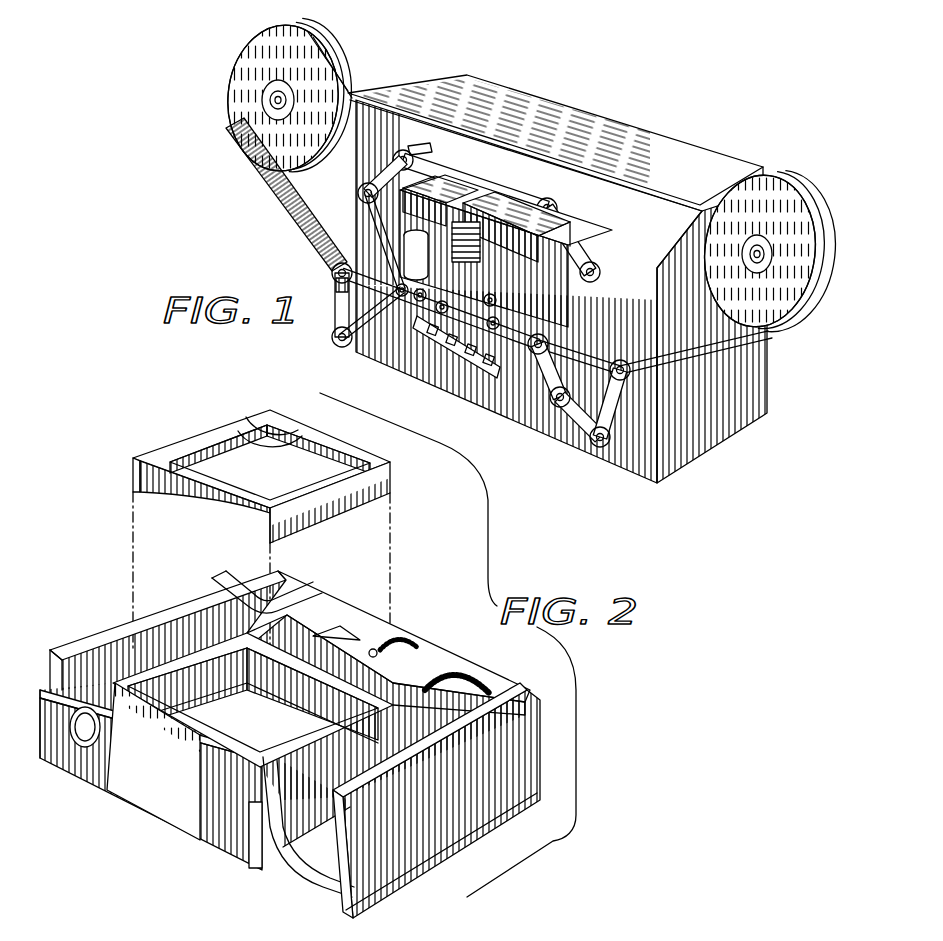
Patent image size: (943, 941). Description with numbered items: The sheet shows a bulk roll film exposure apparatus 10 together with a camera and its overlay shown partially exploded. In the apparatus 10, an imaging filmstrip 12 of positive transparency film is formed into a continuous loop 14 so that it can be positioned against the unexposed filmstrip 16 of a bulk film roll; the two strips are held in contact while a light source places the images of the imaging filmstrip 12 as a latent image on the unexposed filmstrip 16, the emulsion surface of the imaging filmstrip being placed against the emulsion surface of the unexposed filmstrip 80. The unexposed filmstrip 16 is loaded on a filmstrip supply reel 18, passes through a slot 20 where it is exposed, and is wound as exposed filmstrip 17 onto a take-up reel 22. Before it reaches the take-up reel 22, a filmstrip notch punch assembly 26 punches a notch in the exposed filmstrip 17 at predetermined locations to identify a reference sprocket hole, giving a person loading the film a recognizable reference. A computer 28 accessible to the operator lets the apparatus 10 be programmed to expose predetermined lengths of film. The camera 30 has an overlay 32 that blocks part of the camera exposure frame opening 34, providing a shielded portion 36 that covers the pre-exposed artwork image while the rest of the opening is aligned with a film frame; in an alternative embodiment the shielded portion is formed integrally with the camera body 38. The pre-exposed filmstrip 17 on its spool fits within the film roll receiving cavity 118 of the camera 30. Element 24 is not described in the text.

In FIG. 1, the apparatus 10 is at (630, 106).
In FIG. 1, the imaging filmstrip 12 is at (593, 238).
In FIG. 1, the continuous loop 14 is at (487, 160).
In FIG. 1, the unexposed filmstrip 16 is at (499, 203).
In FIG. 1, the exposed filmstrip 17 is at (577, 425).
In FIG. 1, the filmstrip supply reel 18 is at (252, 117).
In FIG. 1, the slot 20 is at (468, 294).
In FIG. 1, the take-up reel 22 is at (787, 300).
In FIG. 1, the short link arm 24 is at (405, 219).
In FIG. 1, the filmstrip notch punch assembly 26 is at (407, 258).
In FIG. 1, the computer 28 is at (452, 349).
In FIG. 1, the unexposed filmstrip 80 is at (414, 331).
In FIG. 2, the camera 30 is at (290, 744).
In FIG. 2, the overlay 32 is at (284, 550).
In FIG. 2, the camera exposure frame opening 34 is at (329, 705).
In FIG. 2, the shielded portion 36 is at (262, 430).
In FIG. 2, the camera body 38 is at (168, 742).
In FIG. 2, the film roll receiving cavity 118 is at (113, 623).